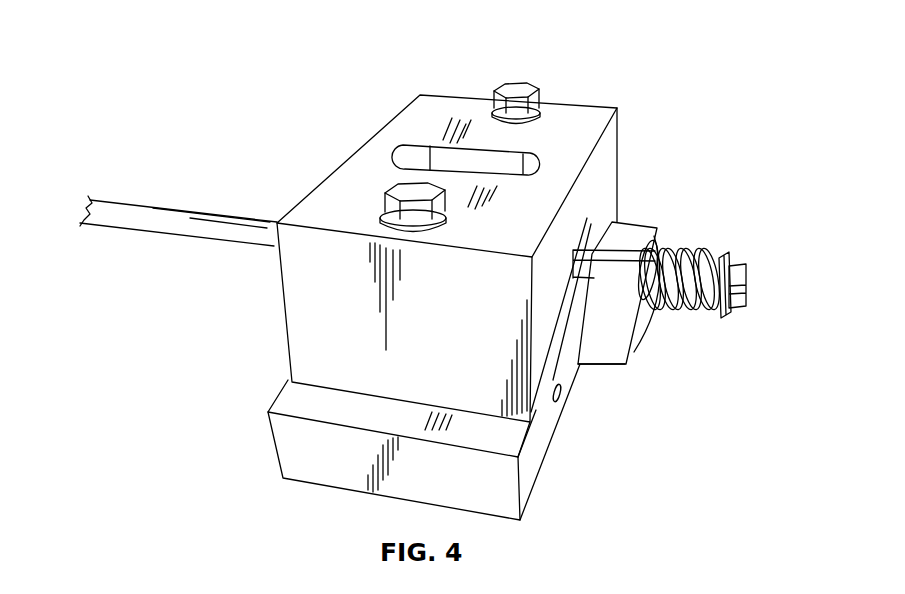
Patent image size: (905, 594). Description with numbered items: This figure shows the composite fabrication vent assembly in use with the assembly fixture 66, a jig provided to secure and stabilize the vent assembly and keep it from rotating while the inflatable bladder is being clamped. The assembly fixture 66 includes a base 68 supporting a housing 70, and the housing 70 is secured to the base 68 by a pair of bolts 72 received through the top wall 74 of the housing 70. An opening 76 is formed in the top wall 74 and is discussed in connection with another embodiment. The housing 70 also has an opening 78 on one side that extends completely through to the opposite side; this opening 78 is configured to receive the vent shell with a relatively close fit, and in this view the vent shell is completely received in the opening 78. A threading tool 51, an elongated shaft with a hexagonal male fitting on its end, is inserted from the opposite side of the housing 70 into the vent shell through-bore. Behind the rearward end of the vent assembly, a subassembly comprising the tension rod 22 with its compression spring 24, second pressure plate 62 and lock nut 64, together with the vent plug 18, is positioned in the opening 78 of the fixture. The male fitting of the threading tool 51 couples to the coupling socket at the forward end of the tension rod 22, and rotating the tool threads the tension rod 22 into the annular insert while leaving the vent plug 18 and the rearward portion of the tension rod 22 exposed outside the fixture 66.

The vent plug 18 is at (635, 231).
The tension rod 22 is at (603, 214).
The compression spring 24 is at (663, 308).
The threading tool 51 is at (140, 212).
The second pressure plate 62 is at (731, 262).
The lock nut 64 is at (728, 312).
The assembly fixture 66 is at (596, 460).
The base 68 is at (298, 437).
The housing 70 is at (295, 302).
The bolts 72 is at (515, 88).
The top wall 74 is at (430, 107).
The opening in top wall 76 is at (423, 157).
The side opening 78 is at (568, 310).